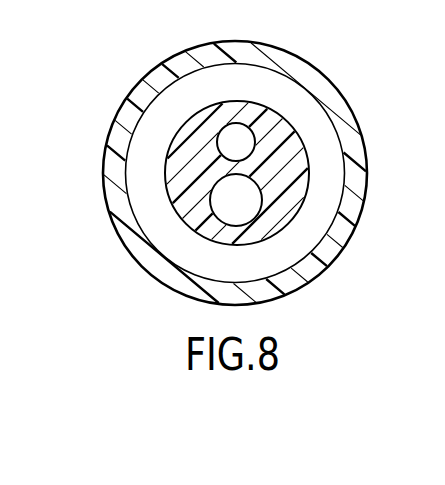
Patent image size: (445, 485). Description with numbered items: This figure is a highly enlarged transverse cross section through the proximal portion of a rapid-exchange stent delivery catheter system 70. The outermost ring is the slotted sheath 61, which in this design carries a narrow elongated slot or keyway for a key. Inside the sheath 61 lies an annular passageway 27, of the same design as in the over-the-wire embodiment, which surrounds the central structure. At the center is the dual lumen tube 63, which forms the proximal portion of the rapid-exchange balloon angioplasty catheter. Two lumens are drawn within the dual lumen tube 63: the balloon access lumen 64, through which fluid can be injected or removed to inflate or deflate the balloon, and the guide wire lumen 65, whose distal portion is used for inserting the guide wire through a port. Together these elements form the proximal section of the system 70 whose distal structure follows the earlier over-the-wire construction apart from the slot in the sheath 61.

The annular passageway 27 is at (245, 78).
The slotted sheath 61 is at (162, 63).
The dual lumen tube 63 is at (288, 212).
The balloon access lumen 64 is at (243, 137).
The guide wire lumen 65 is at (265, 202).
The stent delivery catheter system 70 is at (254, 152).